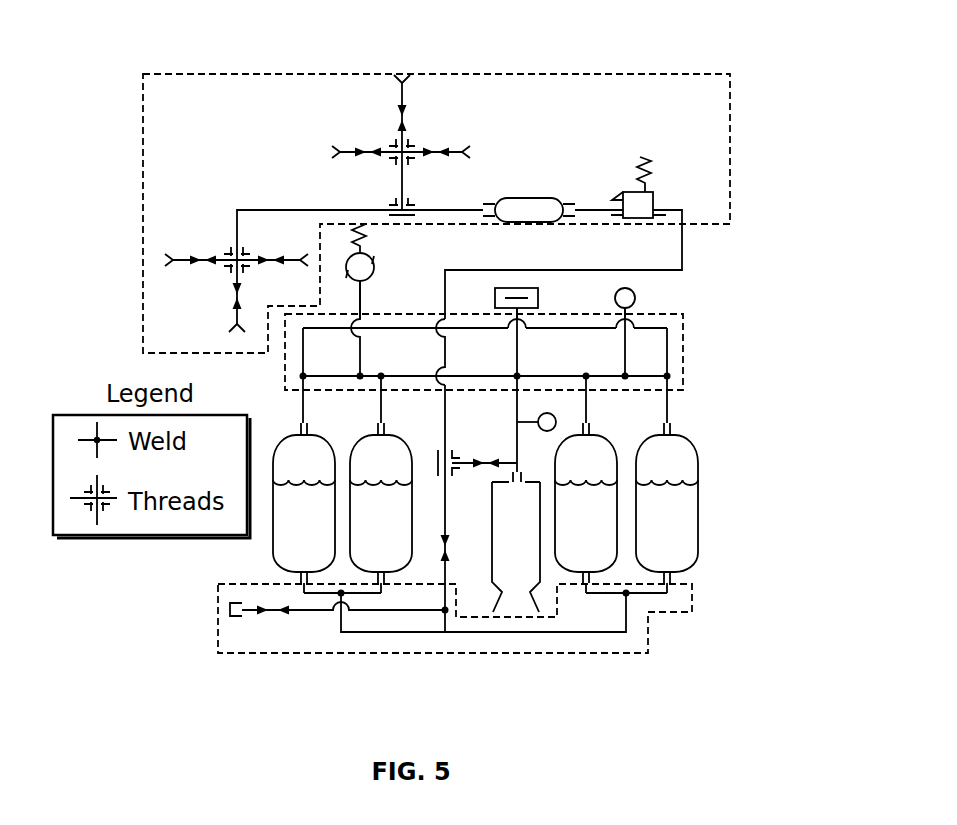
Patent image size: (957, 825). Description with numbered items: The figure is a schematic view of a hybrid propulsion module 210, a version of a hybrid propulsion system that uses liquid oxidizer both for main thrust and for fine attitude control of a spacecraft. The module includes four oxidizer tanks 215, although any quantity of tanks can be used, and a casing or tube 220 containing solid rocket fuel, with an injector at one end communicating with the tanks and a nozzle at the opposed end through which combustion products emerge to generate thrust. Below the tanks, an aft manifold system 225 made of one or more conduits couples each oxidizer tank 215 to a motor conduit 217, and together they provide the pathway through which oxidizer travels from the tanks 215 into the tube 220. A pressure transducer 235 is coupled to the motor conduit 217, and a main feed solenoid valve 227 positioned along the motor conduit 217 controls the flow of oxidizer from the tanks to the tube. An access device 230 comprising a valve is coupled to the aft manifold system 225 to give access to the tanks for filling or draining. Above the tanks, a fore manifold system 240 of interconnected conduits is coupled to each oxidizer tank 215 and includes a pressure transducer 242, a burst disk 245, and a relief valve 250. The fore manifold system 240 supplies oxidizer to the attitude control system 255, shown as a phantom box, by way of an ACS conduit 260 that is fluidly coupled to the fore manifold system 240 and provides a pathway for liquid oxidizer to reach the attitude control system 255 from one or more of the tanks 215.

The hybrid propulsion module 210 is at (108, 38).
The oxidizer tank 215 is at (286, 520).
The motor conduit 217 is at (466, 508).
The tube 220 is at (498, 556).
The aft manifold system 225 is at (670, 613).
The main feed solenoid valve 227 is at (455, 456).
The access device 230 is at (268, 617).
The pressure transducer 235 is at (547, 413).
The fore manifold system 240 is at (690, 356).
The pressure transducer 242 is at (635, 293).
The burst disk 245 is at (538, 298).
The relief valve 250 is at (375, 263).
The attitude control system 255 is at (732, 140).
The ACS conduit 260 is at (682, 262).